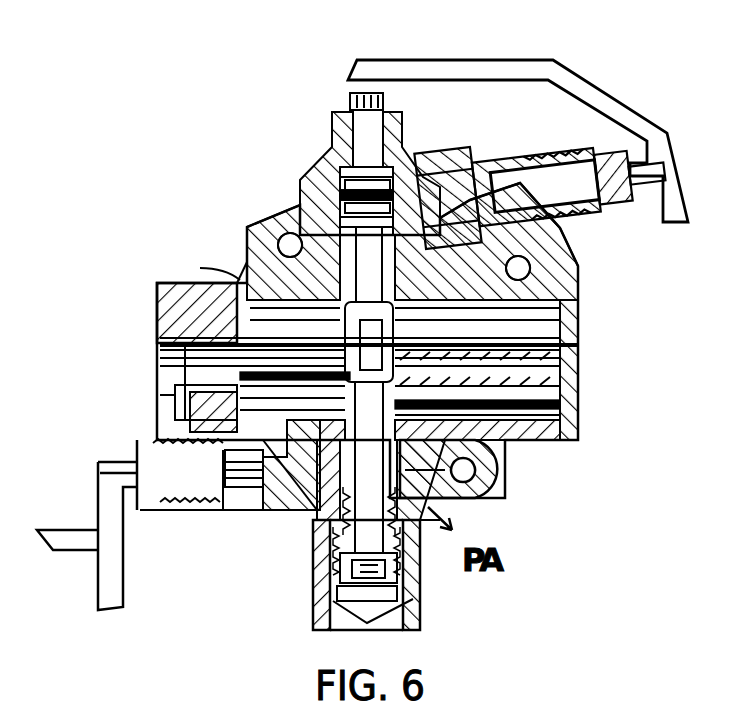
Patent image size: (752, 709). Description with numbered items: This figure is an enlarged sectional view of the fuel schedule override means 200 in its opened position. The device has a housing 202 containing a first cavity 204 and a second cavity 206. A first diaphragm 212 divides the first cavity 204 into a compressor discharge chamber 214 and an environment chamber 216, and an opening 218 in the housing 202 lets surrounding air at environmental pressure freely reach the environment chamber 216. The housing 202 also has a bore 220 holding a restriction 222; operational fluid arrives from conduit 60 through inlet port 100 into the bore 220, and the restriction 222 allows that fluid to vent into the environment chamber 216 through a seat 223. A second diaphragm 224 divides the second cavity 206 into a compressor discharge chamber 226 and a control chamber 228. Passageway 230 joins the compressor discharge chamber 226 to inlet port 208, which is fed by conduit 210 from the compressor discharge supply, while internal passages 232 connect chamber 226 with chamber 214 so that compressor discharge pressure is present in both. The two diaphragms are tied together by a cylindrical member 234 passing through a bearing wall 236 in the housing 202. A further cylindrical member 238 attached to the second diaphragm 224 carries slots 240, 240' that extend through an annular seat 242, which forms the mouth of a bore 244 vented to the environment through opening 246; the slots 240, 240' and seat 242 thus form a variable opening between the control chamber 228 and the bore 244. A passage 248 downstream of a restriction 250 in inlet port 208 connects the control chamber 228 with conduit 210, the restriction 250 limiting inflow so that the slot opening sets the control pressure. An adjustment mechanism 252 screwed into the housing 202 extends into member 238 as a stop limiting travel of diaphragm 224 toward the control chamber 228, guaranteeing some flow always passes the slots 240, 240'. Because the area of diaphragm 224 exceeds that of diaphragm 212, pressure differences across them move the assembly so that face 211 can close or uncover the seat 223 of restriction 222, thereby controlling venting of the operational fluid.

The conduit 60 is at (437, 68).
The inlet port 100 is at (608, 155).
The fuel schedule override means 200 is at (109, 221).
The housing 202 is at (185, 303).
The first cavity 204 is at (667, 297).
The second cavity 206 is at (667, 451).
The inlet port 208 is at (168, 512).
The conduit 210 is at (67, 557).
The face 211 is at (240, 253).
The first diaphragm 212 is at (556, 362).
The compressor discharge chamber 214 is at (160, 366).
The environment chamber 216 is at (545, 262).
The opening 218 is at (200, 268).
The bore 220 is at (418, 197).
The restriction 222 is at (265, 222).
The seat 223 is at (302, 182).
The second diaphragm 224 is at (560, 404).
The compressor discharge chamber 226 is at (668, 383).
The control chamber 228 is at (520, 453).
The passageway 230 is at (157, 430).
The internal passages 232 is at (240, 376).
The cylindrical member 234 is at (160, 338).
The bearing wall 236 is at (157, 413).
The cylindrical member 238 is at (490, 493).
The slot 240 is at (344, 490).
The slot 240' is at (313, 584).
The annular seat 242 is at (500, 460).
The bore 244 is at (425, 520).
The opening 246 is at (470, 520).
The passage 248 is at (227, 440).
The restriction 250 is at (233, 513).
The adjustment mechanism 252 is at (420, 600).